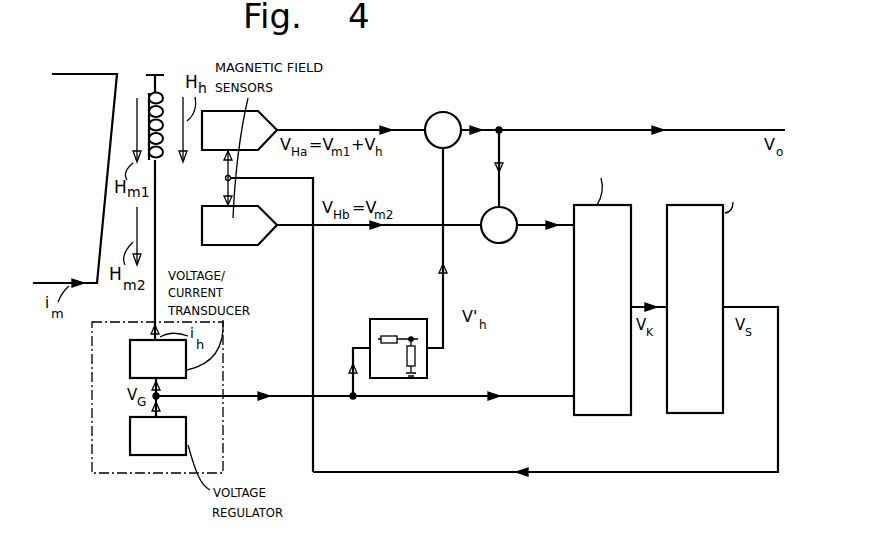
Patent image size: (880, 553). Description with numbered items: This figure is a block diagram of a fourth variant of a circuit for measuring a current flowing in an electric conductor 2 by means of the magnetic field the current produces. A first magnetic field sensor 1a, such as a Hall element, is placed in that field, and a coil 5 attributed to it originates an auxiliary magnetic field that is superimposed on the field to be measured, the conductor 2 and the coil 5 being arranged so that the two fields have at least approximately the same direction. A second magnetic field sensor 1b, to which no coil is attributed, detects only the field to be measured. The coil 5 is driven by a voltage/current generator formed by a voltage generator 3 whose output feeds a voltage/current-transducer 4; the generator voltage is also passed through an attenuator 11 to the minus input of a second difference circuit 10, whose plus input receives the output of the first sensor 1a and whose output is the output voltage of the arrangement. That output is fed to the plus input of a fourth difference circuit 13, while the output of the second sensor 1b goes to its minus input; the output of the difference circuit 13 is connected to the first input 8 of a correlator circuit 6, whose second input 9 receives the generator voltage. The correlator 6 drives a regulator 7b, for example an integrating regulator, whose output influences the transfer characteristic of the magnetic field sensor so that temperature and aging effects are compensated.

The electric conductor 2 is at (80, 75).
The coil 5 is at (160, 207).
The first magnetic field sensor 1a is at (258, 124).
The second magnetic field sensor 1b is at (258, 232).
The second difference circuit 10 is at (448, 138).
The fourth difference circuit 13 is at (510, 228).
The first input of correlator 8 is at (560, 223).
The correlator circuit 6 is at (623, 282).
The regulator 7b is at (710, 250).
The attenuator 11 is at (382, 329).
The voltage/current-transducer 4 is at (138, 357).
The voltage generator 3 is at (143, 437).
The second input of correlator 9 is at (545, 398).